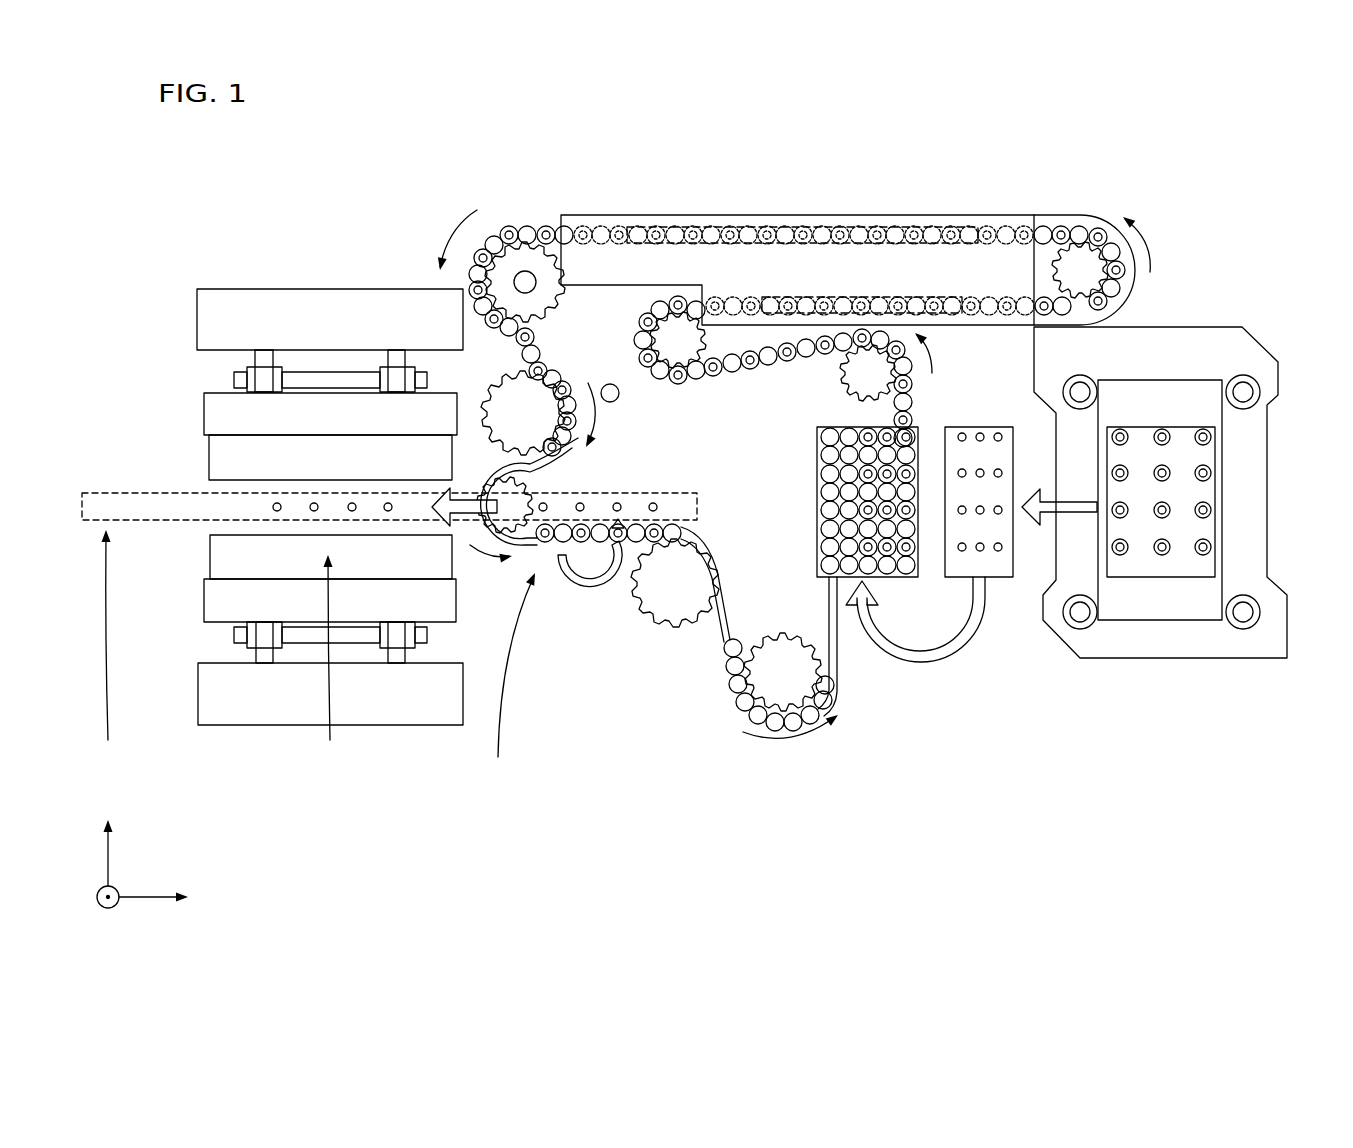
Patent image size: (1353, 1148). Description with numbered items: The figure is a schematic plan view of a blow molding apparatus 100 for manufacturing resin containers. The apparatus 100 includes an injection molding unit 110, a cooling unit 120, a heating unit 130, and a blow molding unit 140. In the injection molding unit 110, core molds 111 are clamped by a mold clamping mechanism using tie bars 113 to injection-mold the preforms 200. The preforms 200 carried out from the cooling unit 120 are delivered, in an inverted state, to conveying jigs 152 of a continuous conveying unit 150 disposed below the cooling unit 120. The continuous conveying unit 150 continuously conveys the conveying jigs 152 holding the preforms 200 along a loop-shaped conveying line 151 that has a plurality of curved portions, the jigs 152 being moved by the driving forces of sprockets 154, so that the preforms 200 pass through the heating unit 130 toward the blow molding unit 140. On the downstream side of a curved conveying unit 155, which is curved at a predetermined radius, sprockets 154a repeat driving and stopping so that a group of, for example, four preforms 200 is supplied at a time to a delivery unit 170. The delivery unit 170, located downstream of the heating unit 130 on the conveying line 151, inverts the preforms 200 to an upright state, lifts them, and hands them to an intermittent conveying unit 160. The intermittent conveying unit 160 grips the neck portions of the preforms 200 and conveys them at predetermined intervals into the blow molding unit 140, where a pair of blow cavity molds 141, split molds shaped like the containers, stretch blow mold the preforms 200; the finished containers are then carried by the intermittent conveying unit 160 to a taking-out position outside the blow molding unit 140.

The blow molding apparatus 100 is at (1128, 160).
The injection molding unit 110 is at (1264, 328).
The core molds 111 is at (1160, 350).
The tie bars 113 is at (1085, 375).
The cooling unit 120 is at (1003, 586).
The heating unit 130 is at (826, 197).
The blow molding unit 140 is at (283, 252).
The blow cavity molds 141 is at (218, 560).
The continuous conveying unit 150 is at (712, 388).
The conveying line 151 is at (688, 395).
The conveying jigs 152 is at (908, 418).
The sprockets 154 is at (855, 380).
The sprockets 154a is at (545, 400).
The curved conveying unit 155 is at (519, 197).
The intermittent conveying unit 160 is at (697, 507).
The delivery unit 170 is at (594, 600).
The preforms 200 is at (277, 507).